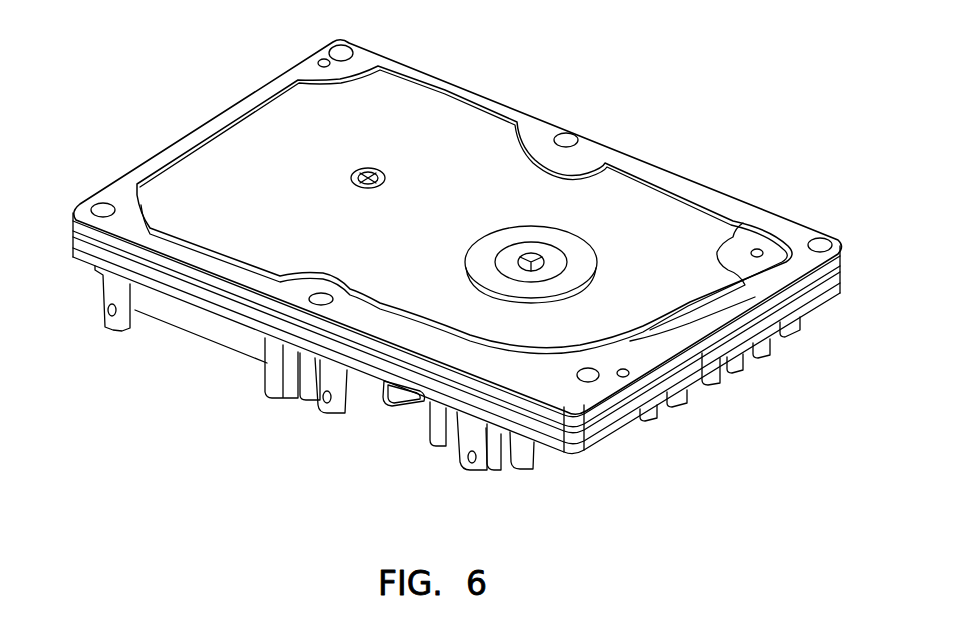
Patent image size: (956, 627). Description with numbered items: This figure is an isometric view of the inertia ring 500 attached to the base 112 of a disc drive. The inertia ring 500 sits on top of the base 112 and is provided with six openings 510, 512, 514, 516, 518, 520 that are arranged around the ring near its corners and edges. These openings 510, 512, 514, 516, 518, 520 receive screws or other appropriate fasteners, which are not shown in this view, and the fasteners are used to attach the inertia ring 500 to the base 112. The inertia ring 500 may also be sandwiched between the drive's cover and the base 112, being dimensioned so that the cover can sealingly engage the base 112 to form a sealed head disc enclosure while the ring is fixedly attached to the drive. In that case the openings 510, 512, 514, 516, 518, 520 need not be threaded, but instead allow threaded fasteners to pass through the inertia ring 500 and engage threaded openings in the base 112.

The inertia ring 500 is at (693, 188).
The base 112 is at (603, 437).
The opening 510 is at (590, 376).
The opening 512 is at (820, 243).
The opening 514 is at (566, 138).
The opening 516 is at (342, 50).
The opening 518 is at (103, 208).
The opening 520 is at (320, 298).